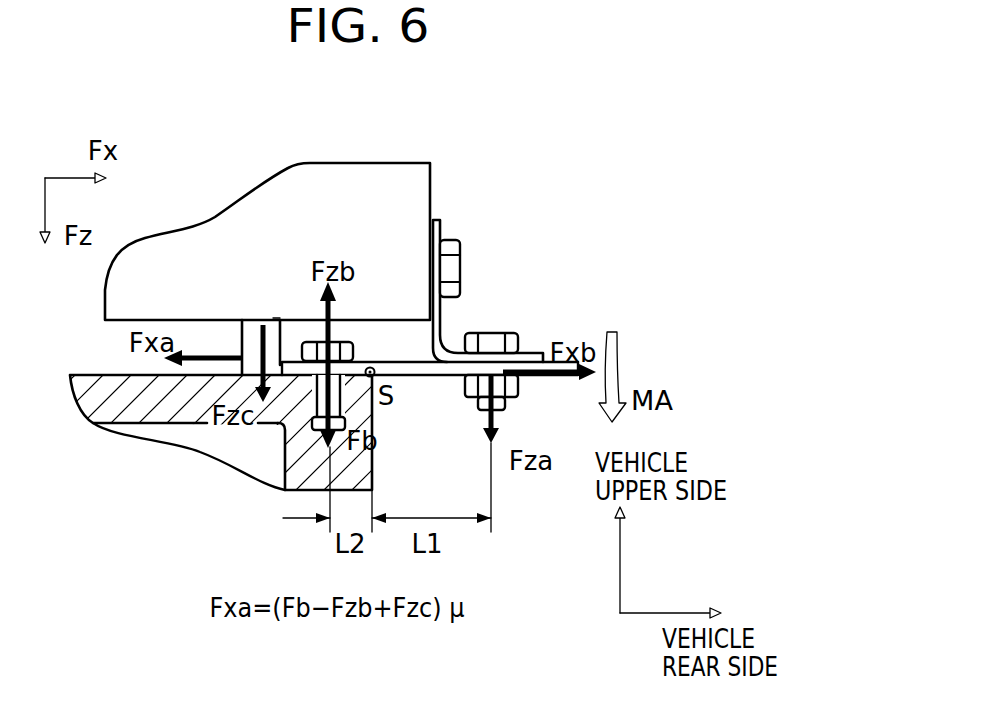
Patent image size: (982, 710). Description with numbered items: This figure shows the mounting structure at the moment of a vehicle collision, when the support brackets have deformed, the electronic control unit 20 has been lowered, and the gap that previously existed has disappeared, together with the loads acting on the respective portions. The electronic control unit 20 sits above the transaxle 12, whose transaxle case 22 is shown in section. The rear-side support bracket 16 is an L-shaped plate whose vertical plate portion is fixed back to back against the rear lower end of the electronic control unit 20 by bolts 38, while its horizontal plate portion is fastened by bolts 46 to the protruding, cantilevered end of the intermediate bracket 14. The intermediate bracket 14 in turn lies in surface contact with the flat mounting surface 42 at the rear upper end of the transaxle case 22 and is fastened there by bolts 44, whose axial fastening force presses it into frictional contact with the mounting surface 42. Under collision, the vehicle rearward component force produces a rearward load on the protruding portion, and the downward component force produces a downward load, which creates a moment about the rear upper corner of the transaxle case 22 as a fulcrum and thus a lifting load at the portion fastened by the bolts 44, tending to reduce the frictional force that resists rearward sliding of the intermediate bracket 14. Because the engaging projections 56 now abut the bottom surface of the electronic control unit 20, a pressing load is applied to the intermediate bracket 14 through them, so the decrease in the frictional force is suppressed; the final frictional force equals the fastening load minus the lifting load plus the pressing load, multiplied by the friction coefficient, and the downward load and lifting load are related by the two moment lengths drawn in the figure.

The transaxle 12 is at (172, 486).
The intermediate bracket 14 is at (428, 377).
The rear-side support bracket 16 is at (500, 289).
The electronic control unit 20 is at (358, 182).
The transaxle case 22 is at (95, 408).
The bolt 38 is at (455, 268).
The mounting surface 42 is at (266, 400).
The bolt 44 is at (355, 350).
The bolt 46 is at (490, 334).
The engaging projection 56 is at (273, 318).